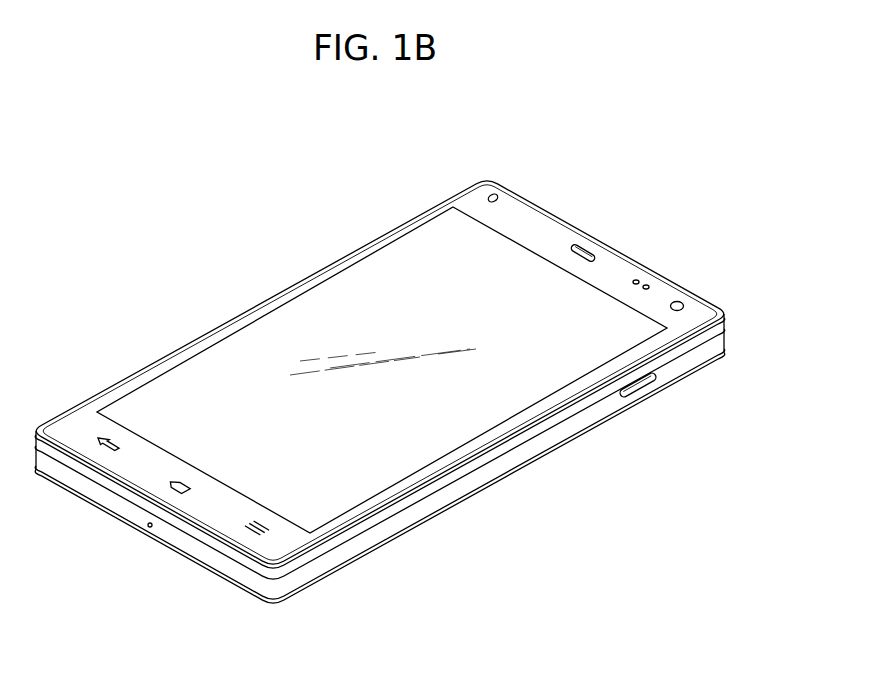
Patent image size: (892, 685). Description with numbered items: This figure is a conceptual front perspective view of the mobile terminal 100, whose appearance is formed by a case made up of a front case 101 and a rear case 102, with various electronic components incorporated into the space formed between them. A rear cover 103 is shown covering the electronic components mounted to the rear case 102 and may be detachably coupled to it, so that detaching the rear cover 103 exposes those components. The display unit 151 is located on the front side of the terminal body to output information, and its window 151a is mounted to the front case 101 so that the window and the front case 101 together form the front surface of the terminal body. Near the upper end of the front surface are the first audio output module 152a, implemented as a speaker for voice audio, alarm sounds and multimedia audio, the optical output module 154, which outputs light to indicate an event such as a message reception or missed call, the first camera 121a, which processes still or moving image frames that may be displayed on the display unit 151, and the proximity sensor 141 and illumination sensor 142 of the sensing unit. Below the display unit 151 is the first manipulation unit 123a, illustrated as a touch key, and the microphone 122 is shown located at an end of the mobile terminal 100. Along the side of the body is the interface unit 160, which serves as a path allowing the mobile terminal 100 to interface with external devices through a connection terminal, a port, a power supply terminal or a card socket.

The mobile terminal 100 is at (418, 376).
The front case 101 is at (719, 322).
The rear case 102 is at (717, 343).
The rear cover 103 is at (712, 360).
The first camera 121a is at (683, 303).
The microphone 122 is at (147, 528).
The first manipulation unit 123a is at (250, 527).
The proximity sensor 141 is at (648, 285).
The illumination sensor 142 is at (637, 279).
The display unit 151 is at (243, 352).
The window 151a is at (410, 262).
The first audio output module 152a is at (583, 248).
The optical output module 154 is at (500, 196).
The interface unit 160 is at (640, 388).